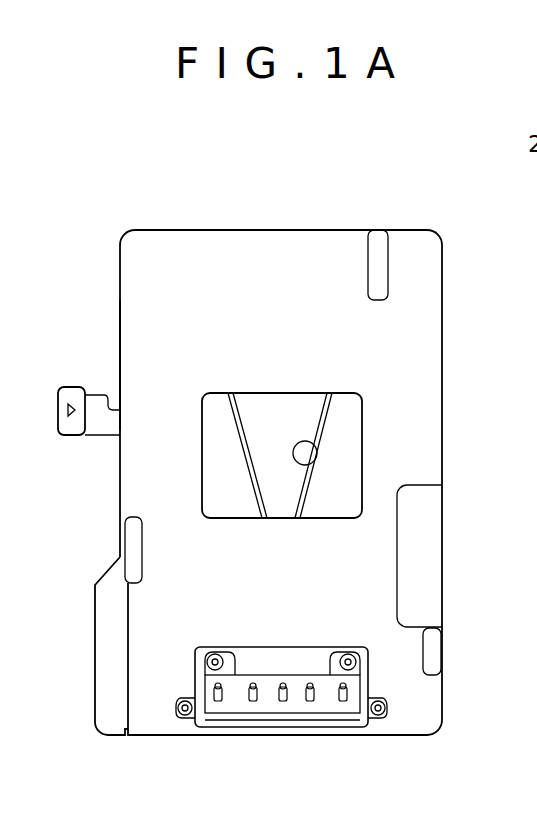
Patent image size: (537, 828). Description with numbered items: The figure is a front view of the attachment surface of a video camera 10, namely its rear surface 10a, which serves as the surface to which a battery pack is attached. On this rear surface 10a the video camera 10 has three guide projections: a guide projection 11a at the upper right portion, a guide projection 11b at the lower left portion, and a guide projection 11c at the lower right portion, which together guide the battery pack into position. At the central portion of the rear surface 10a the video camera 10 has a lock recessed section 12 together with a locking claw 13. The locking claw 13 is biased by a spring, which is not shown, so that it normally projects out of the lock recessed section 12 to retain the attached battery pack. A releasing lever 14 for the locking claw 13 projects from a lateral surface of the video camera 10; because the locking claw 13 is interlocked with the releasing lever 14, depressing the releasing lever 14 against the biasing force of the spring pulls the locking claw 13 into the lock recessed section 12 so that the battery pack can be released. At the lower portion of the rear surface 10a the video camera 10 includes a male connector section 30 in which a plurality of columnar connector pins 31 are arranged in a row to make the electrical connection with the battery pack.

The video camera 10 is at (235, 207).
The rear surface 10a is at (132, 293).
The guide projection 11a is at (378, 238).
The guide projection 11b is at (132, 548).
The guide projection 11c is at (433, 652).
The lock recessed section 12 is at (222, 441).
The locking claw 13 is at (297, 456).
The releasing lever 14 is at (68, 395).
The male connector section 30 is at (218, 718).
The connector pins 31 is at (312, 695).